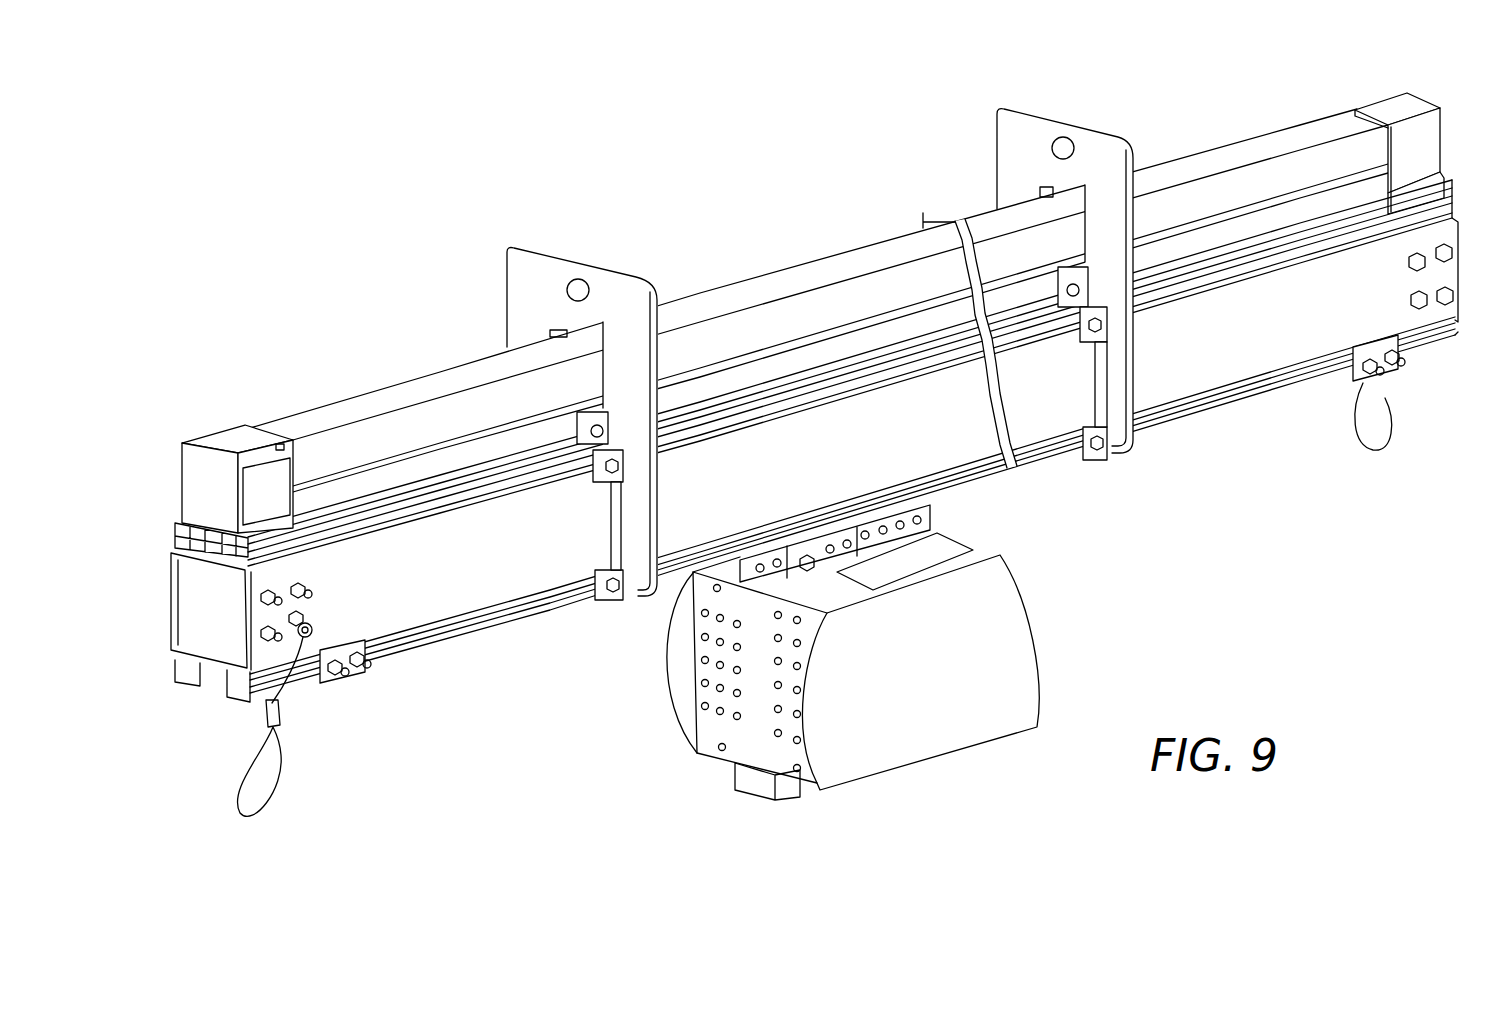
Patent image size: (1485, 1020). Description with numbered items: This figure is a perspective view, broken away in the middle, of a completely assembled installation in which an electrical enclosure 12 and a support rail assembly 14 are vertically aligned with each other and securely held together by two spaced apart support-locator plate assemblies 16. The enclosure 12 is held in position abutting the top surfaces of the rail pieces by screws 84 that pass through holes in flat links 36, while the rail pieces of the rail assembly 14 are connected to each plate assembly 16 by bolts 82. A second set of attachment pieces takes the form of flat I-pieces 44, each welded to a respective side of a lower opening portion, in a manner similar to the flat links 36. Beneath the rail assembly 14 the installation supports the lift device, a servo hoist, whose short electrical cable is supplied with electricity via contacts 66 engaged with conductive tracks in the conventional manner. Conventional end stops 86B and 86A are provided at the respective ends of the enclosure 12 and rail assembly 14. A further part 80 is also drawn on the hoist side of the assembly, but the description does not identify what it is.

The electrical enclosure 12 is at (778, 274).
The support rail assembly 14 is at (1258, 370).
The support-locator plate assembly 16 is at (518, 250).
The flat links 36 is at (598, 414).
The flat I-pieces 44 is at (612, 535).
The contacts 66 is at (1022, 628).
The mounting plate 80 is at (858, 540).
The bolts 82 is at (603, 470).
The screws 84 is at (594, 428).
The end stop 86A is at (193, 633).
The end stop 86B is at (207, 458).